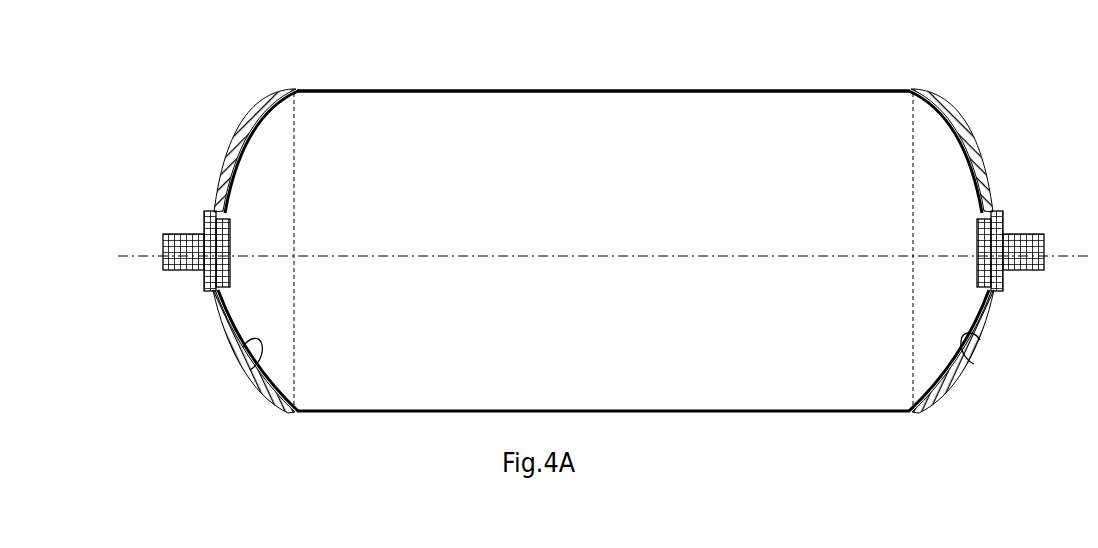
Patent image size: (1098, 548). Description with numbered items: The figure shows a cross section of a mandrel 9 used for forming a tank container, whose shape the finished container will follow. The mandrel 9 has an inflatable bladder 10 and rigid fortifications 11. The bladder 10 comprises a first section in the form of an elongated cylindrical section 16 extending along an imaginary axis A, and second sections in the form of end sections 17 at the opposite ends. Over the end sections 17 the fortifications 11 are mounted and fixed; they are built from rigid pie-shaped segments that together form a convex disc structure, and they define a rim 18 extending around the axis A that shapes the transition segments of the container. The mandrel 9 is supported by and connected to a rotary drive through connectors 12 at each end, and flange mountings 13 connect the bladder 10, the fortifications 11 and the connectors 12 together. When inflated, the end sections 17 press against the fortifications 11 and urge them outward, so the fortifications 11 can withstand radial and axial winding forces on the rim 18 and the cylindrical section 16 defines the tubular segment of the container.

The mandrel 9 is at (678, 73).
The inflatable bladder 10 is at (588, 84).
The fortifications 11 is at (217, 164).
The connectors 12 is at (179, 270).
The flange mountings 13 is at (206, 212).
The cylindrical section 16 is at (795, 95).
The end sections 17 is at (243, 347).
The rim 18 is at (263, 98).